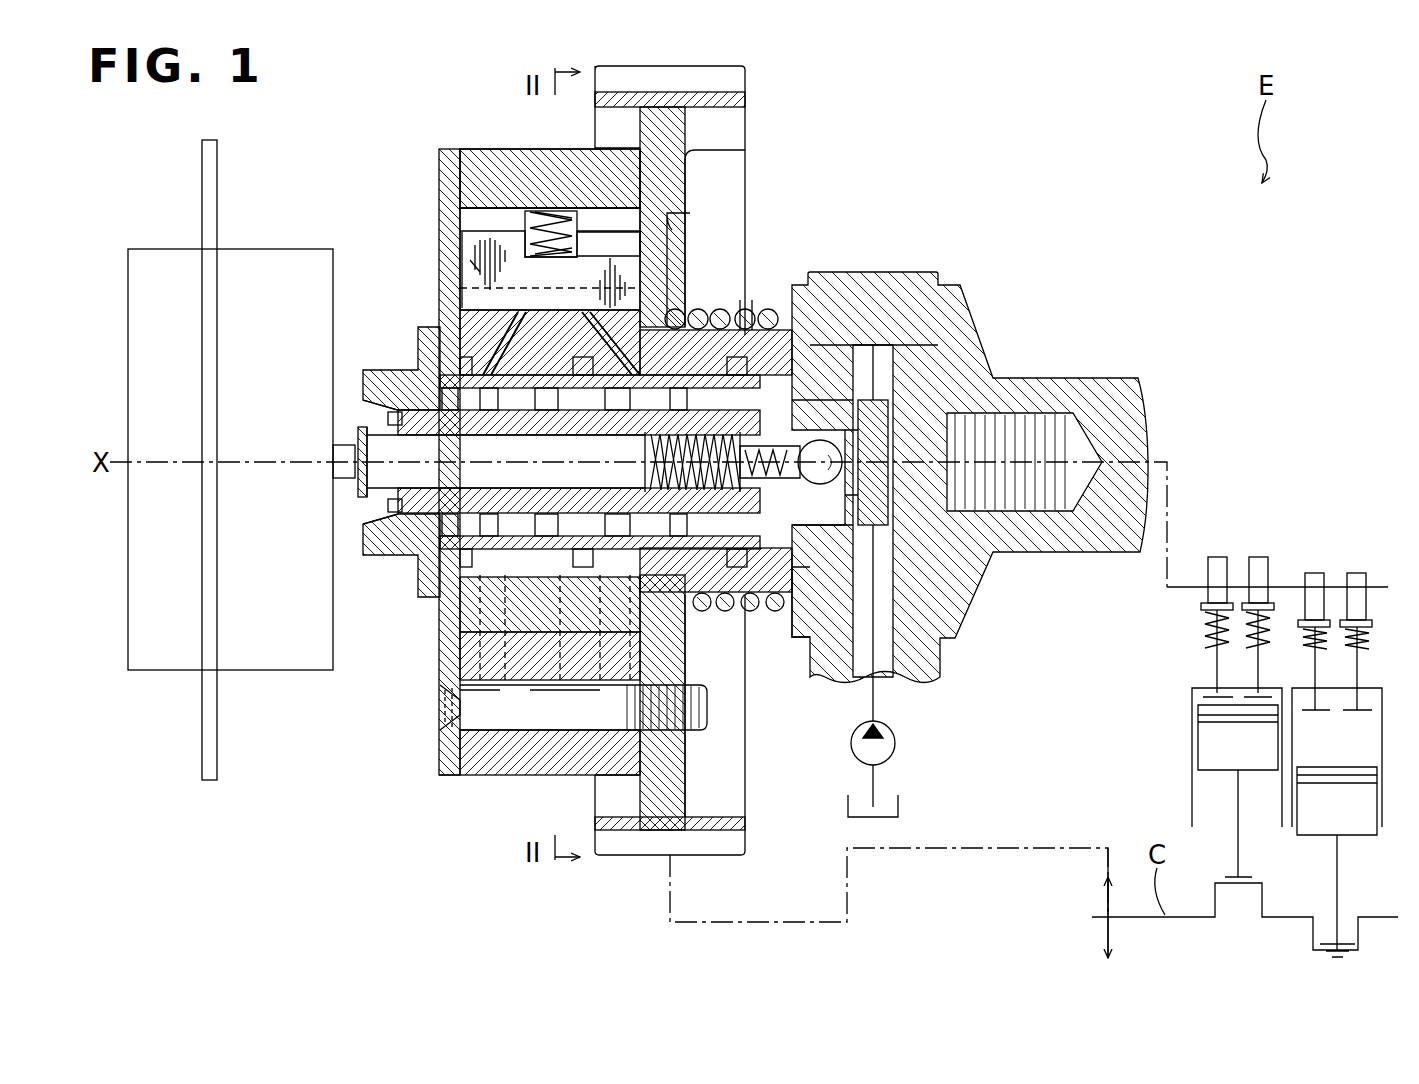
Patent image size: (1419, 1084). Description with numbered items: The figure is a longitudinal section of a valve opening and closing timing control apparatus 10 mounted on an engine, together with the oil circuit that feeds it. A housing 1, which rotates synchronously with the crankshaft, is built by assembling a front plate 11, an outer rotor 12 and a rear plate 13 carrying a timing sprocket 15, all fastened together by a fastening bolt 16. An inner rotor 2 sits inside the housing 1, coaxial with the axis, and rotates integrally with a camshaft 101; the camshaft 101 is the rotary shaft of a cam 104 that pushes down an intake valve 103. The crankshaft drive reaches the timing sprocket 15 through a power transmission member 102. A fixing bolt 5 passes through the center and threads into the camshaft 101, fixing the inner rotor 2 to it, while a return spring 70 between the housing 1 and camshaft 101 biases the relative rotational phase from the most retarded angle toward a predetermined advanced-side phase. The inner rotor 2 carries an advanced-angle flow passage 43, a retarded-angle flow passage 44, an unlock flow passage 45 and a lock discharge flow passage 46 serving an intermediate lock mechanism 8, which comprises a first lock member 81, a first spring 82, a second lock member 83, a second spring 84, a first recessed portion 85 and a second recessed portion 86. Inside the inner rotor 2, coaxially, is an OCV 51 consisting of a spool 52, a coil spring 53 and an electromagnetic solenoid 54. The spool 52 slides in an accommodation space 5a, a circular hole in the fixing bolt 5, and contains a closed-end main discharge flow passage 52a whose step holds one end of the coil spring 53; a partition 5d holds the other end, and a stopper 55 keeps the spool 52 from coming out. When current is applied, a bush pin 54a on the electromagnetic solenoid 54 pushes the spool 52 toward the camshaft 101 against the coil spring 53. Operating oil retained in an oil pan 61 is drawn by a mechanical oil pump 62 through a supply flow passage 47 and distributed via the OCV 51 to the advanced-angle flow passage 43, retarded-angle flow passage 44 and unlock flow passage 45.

The housing 1 is at (440, 150).
The inner rotor 2 is at (455, 658).
The fixing bolt 5 is at (360, 385).
The accommodation space 5a is at (716, 599).
The partition 5d is at (747, 322).
The intermediate lock mechanism 8 is at (496, 238).
The valve opening and closing timing control apparatus 10 is at (425, 793).
The front plate 11 is at (440, 186).
The outer rotor 12 is at (500, 148).
The rear plate 13 is at (690, 150).
The timing sprocket 15 is at (645, 856).
The fastening bolt 16 is at (710, 706).
The advanced-angle flow passage 43 is at (565, 711).
The retarded-angle flow passage 44 is at (486, 711).
The unlock flow passage 45 is at (520, 345).
The lock discharge flow passage 46 is at (650, 335).
The supply flow passage 47 is at (883, 630).
The OCV 51 is at (356, 427).
The spool 52 is at (432, 383).
The main discharge flow passage 52a is at (428, 516).
The coil spring 53 is at (644, 457).
The electromagnetic solenoid 54 is at (162, 250).
The bush pin 54a is at (345, 475).
The stopper 55 is at (368, 555).
The oil pan 61 is at (898, 800).
The oil pump 62 is at (897, 740).
The return spring 70 is at (772, 612).
The first lock member 81 is at (523, 211).
The first spring 82 is at (605, 211).
The second lock member 83 is at (513, 225).
The second spring 84 is at (598, 218).
The first recessed portion 85 is at (412, 270).
The second recessed portion 86 is at (458, 240).
The camshaft 101 is at (1098, 378).
The power transmission member 102 is at (850, 890).
The intake valve 103 is at (1248, 695).
The cam 104 is at (1258, 557).